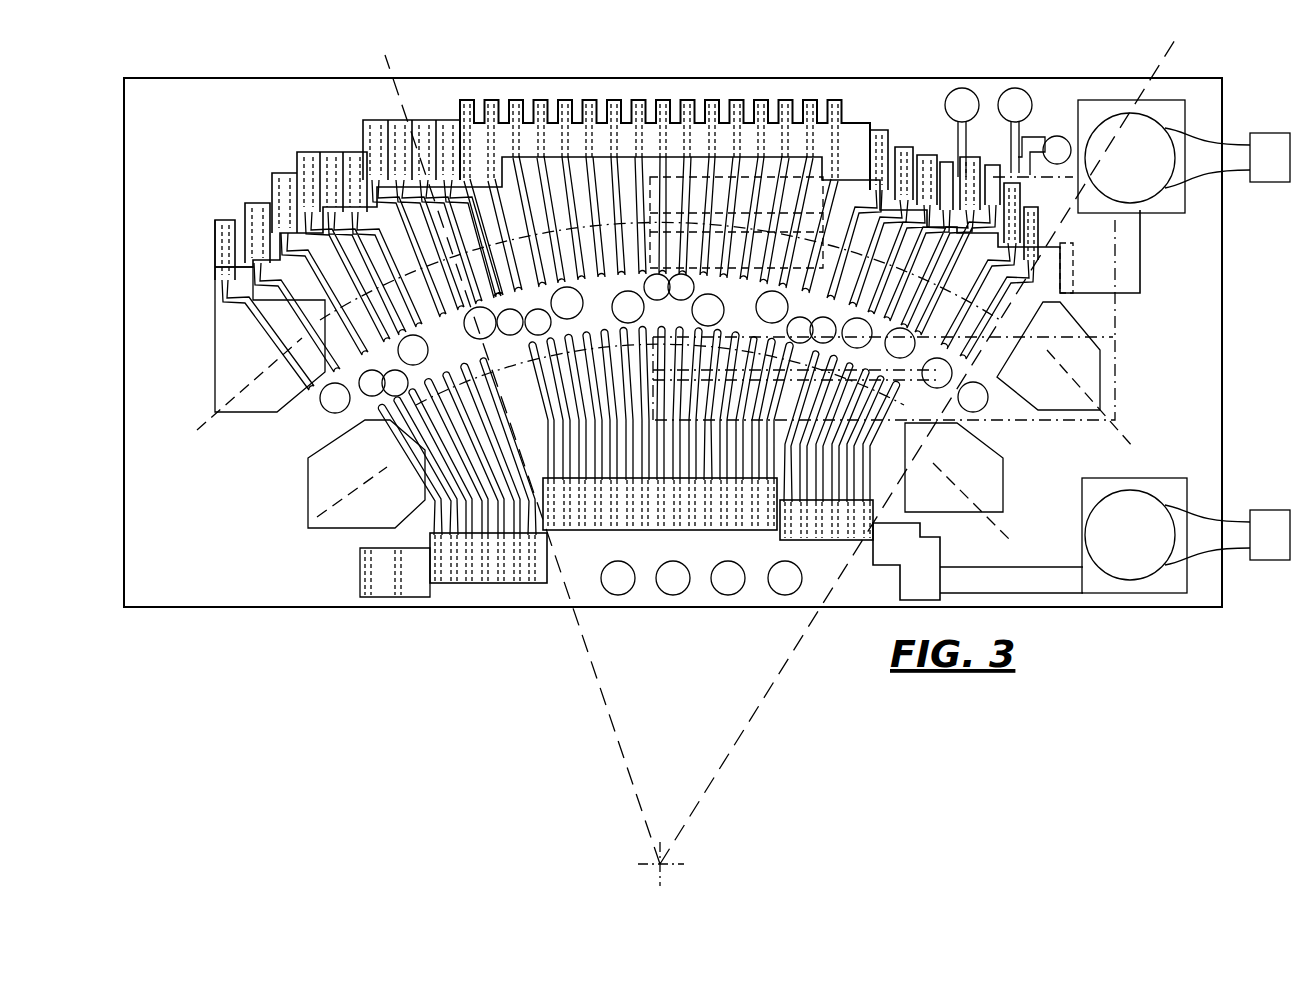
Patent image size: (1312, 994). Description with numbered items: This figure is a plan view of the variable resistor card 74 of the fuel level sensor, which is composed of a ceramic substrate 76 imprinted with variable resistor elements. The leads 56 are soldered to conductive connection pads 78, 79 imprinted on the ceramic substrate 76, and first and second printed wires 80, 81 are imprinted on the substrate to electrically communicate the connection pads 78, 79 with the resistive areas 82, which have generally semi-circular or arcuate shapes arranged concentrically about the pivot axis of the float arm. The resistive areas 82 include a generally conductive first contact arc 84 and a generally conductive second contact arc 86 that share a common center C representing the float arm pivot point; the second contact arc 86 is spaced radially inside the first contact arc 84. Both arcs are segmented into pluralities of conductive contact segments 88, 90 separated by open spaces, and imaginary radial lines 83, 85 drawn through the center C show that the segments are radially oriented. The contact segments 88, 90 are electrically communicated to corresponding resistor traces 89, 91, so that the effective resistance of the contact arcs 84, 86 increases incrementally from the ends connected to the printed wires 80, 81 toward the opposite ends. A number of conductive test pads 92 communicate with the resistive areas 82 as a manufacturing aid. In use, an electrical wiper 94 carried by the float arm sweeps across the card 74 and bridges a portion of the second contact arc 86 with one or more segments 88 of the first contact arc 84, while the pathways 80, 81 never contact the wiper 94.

The variable resistor card 74 is at (818, 52).
The ceramic substrate 76 is at (1072, 86).
The conductive connection pad 78 is at (1190, 100).
The conductive connection pad 79 is at (1185, 590).
The first printed wire 80 is at (1140, 232).
The second printed wire 81 is at (1063, 580).
The resistive areas 82 is at (1098, 372).
The imaginary radial line 83 is at (594, 682).
The first contact arc 84 is at (210, 412).
The imaginary radial line 85 is at (793, 658).
The second contact arc 86 is at (1000, 516).
The conductive contact segments 88 is at (303, 312).
The resistor trace 89 is at (530, 140).
The conductive contact segments 90 is at (385, 422).
The resistor trace 91 is at (605, 490).
The test pads 92 is at (1015, 88).
The electrical wiper 94 is at (1118, 318).
The leads 56 is at (1270, 134).
The common center C is at (668, 862).